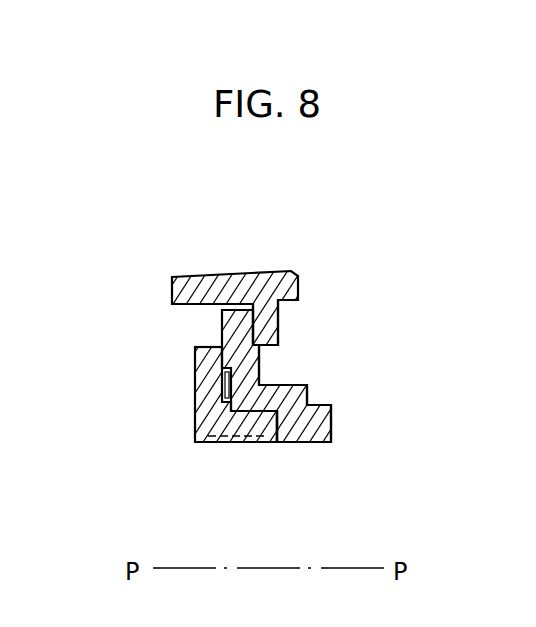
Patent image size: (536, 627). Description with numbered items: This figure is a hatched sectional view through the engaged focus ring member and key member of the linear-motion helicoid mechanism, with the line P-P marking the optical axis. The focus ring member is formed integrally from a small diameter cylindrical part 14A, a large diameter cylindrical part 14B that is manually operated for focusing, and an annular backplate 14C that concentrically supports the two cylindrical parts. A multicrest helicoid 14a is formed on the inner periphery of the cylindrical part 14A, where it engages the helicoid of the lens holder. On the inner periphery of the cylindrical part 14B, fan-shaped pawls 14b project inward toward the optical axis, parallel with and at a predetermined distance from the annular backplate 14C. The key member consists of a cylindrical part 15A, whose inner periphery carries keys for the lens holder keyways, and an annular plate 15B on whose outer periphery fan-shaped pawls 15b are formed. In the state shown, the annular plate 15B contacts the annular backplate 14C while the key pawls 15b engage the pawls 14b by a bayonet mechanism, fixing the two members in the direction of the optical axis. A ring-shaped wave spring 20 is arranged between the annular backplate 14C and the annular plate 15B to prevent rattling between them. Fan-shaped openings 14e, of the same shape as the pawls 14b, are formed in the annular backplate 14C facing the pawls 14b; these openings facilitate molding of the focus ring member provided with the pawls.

The large diameter cylindrical part 14B is at (237, 287).
The fan-shaped pawls 14b is at (267, 328).
The fan-shaped openings 14e is at (191, 312).
The annular backplate 14C is at (210, 382).
The small diameter cylindrical part 14A is at (263, 428).
The multicrest helicoid 14a is at (216, 444).
The fan-shaped pawls 15b is at (237, 322).
The annular plate 15B is at (268, 378).
The cylindrical part 15A is at (302, 425).
The wave spring 20 is at (222, 392).